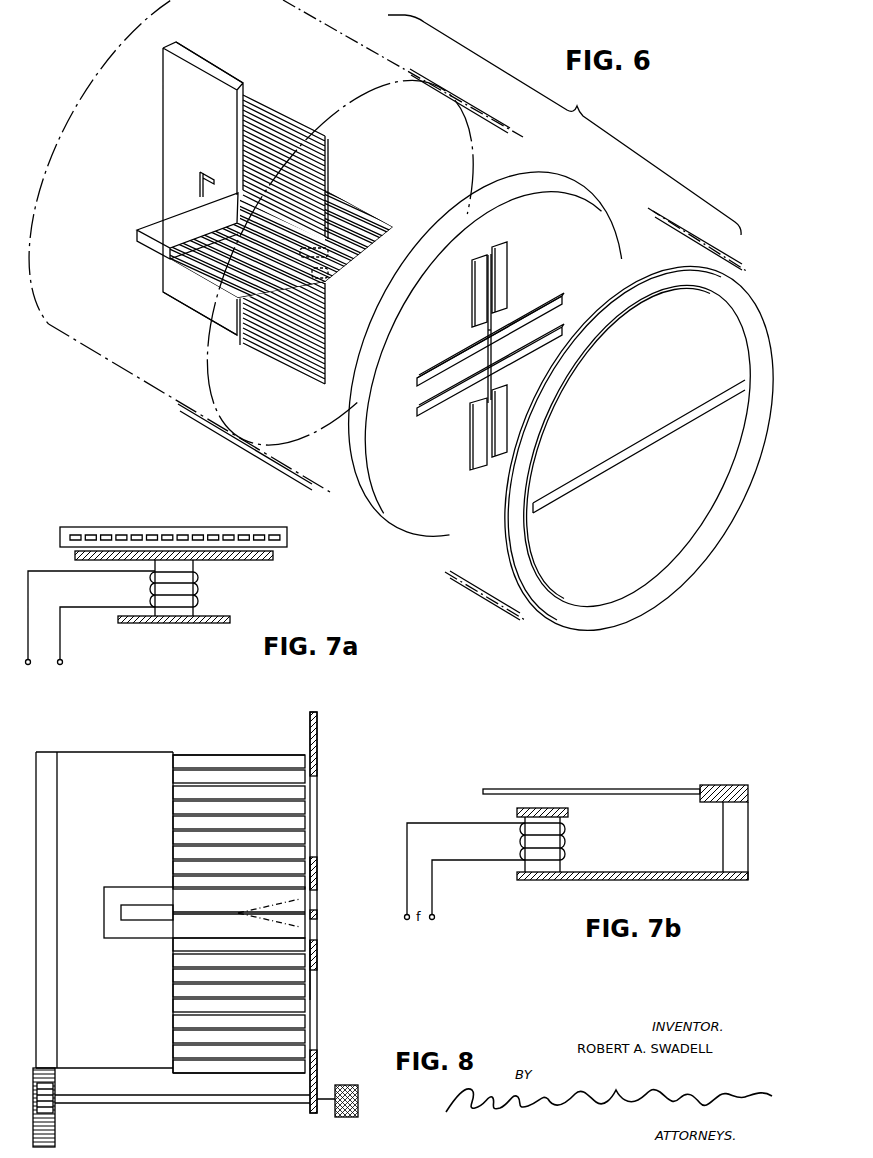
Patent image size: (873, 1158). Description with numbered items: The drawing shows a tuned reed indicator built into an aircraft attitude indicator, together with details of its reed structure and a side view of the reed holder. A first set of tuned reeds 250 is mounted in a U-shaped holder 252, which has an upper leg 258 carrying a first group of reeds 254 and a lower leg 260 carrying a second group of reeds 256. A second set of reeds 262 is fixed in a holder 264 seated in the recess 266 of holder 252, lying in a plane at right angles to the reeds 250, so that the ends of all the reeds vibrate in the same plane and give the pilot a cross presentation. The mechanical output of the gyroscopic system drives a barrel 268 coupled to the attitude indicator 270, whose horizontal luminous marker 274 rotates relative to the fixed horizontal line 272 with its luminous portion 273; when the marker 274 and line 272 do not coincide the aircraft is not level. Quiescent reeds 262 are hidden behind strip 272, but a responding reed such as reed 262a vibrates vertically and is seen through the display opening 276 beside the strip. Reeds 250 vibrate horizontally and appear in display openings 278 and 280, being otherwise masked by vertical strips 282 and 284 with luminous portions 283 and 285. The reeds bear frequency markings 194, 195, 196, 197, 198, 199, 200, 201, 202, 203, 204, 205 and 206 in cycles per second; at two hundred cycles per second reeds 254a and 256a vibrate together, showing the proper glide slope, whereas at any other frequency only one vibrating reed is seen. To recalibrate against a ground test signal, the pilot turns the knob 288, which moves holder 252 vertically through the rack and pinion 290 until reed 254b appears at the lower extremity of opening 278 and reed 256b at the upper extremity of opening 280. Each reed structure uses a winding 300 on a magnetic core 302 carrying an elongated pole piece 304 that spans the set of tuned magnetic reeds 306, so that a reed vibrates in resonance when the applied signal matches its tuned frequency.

In FIG. 8, the fiber channel 194 is at (239, 762).
In FIG. 8, the fiber channel 195 is at (239, 777).
In FIG. 8, the fiber channel 196 is at (239, 793).
In FIG. 8, the fiber channel 197 is at (239, 808).
In FIG. 8, the fiber channel 198 is at (239, 884).
In FIG. 8, the fiber channel 199 is at (239, 899).
In FIG. 8, the fiber channel 200 is at (239, 914).
In FIG. 8, the fiber channel 201 is at (239, 929).
In FIG. 8, the fiber channel 202 is at (239, 944).
In FIG. 8, the fiber channel 203 is at (239, 1022).
In FIG. 8, the fiber channel 204 is at (239, 1037).
In FIG. 8, the fiber channel 205 is at (239, 1052).
In FIG. 8, the fiber channel 206 is at (239, 1067).
In FIG. 6, the first set of tuned reeds 250 is at (320, 95).
In FIG. 6, the holder 252 is at (180, 82).
In FIG. 8, the first group of reeds 254 is at (226, 793).
In FIG. 8, the reed 254a is at (300, 852).
In FIG. 8, the reed 254b is at (298, 882).
In FIG. 8, the second group of reeds 256 is at (240, 1052).
In FIG. 8, the reed 256a is at (298, 977).
In FIG. 8, the reed 256b is at (298, 1004).
In FIG. 6, the upper leg 258 is at (218, 92).
In FIG. 6, the lower leg 260 is at (183, 290).
In FIG. 8, the second set of reeds 262 is at (240, 913).
In FIG. 6, the reed 262a is at (305, 262).
In FIG. 6, the holder 264 is at (160, 222).
In FIG. 6, the recess 266 is at (204, 178).
In FIG. 6, the barrel 268 is at (80, 124).
In FIG. 6, the attitude indicator 270 is at (547, 594).
In FIG. 6, the fixed horizontal line 272 is at (428, 385).
In FIG. 6, the luminous portion 273 is at (456, 378).
In FIG. 6, the horizontal luminous marker 274 is at (550, 503).
In FIG. 8, the horizontal luminous marker 274 is at (318, 914).
In FIG. 6, the display opening 276 is at (538, 312).
In FIG. 6, the display opening 278 is at (475, 290).
In FIG. 6, the display opening 280 is at (498, 422).
In FIG. 6, the vertical strip 282 is at (500, 270).
In FIG. 6, the luminous portion 283 is at (500, 323).
In FIG. 6, the vertical strip 284 is at (475, 449).
In FIG. 6, the luminous portion 285 is at (500, 373).
In FIG. 8, the knob 288 is at (345, 1085).
In FIG. 8, the rack and pinion 290 is at (63, 1126).
In FIG. 7A, the winding 300 is at (29, 604).
In FIG. 7A, the magnetic core 302 is at (180, 570).
In FIG. 7B, the magnetic core 302 is at (548, 823).
In FIG. 7A, the elongated pole piece 304 is at (253, 562).
In FIG. 7B, the elongated pole piece 304 is at (517, 812).
In FIG. 7A, the tuned magnetic reeds 306 is at (166, 534).
In FIG. 7B, the tuned magnetic reeds 306 is at (565, 789).